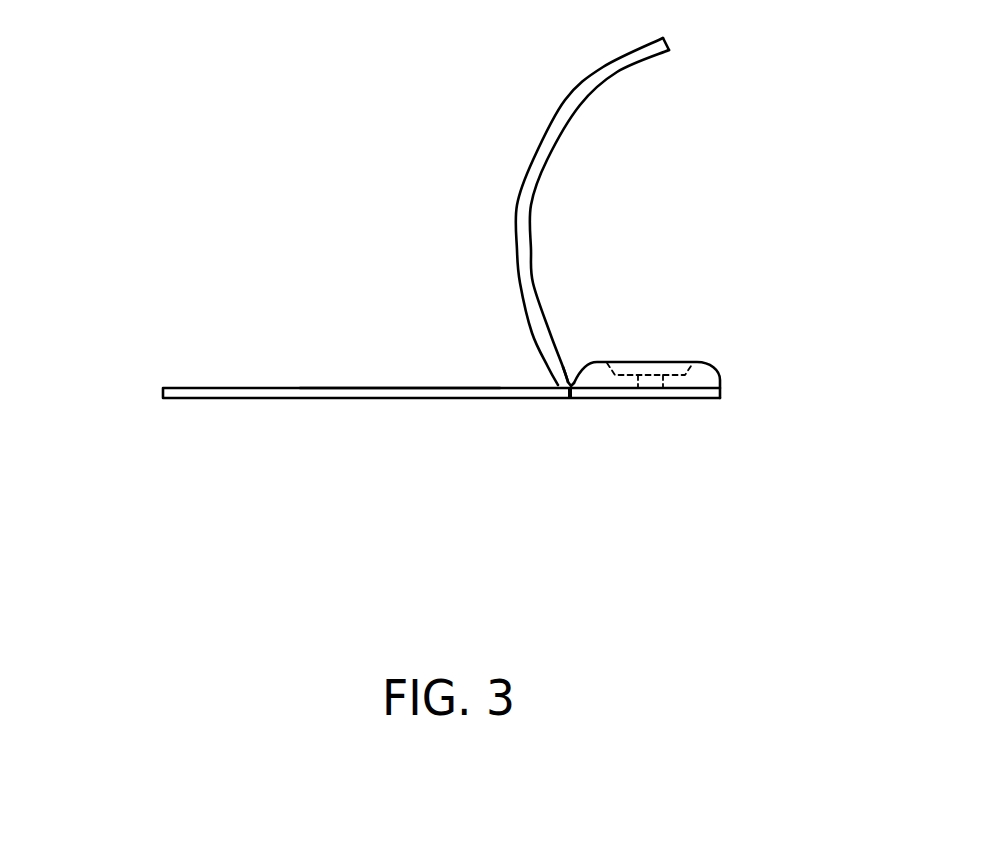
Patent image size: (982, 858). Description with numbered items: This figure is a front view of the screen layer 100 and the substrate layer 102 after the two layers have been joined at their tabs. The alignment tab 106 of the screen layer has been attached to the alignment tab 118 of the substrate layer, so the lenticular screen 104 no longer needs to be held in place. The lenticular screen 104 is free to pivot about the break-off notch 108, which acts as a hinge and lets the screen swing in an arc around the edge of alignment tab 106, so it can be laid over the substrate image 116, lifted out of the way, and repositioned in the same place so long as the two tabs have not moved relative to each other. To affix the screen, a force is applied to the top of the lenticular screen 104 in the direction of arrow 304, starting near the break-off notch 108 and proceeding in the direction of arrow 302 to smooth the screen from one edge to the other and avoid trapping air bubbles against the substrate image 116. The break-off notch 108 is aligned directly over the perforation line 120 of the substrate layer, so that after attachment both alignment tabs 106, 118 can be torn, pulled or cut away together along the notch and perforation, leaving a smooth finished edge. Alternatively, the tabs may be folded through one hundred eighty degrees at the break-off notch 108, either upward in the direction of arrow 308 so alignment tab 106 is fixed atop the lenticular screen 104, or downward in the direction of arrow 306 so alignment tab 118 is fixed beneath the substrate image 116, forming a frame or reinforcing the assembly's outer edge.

The screen layer 100 is at (686, 37).
The substrate layer 102 is at (148, 391).
The lenticular screen 104 is at (547, 160).
The alignment tab 106 is at (720, 382).
The break-off notch 108 is at (572, 380).
The substrate image 116 is at (403, 398).
The alignment tab 118 is at (633, 400).
The perforation line 120 is at (570, 400).
The arrow 302 is at (380, 312).
The arrow 304 is at (320, 255).
The arrow 306 is at (725, 405).
The arrow 308 is at (708, 308).